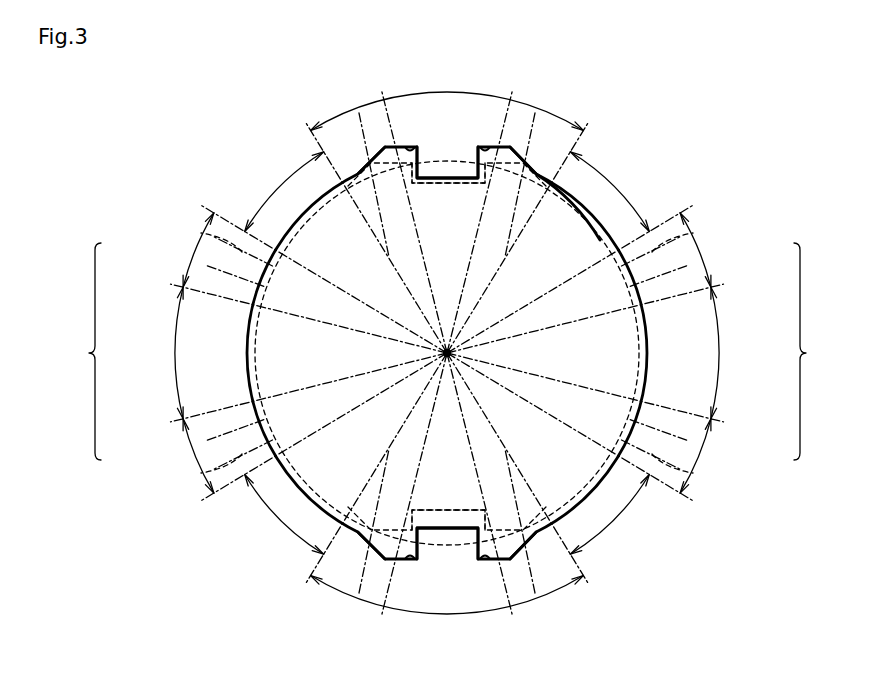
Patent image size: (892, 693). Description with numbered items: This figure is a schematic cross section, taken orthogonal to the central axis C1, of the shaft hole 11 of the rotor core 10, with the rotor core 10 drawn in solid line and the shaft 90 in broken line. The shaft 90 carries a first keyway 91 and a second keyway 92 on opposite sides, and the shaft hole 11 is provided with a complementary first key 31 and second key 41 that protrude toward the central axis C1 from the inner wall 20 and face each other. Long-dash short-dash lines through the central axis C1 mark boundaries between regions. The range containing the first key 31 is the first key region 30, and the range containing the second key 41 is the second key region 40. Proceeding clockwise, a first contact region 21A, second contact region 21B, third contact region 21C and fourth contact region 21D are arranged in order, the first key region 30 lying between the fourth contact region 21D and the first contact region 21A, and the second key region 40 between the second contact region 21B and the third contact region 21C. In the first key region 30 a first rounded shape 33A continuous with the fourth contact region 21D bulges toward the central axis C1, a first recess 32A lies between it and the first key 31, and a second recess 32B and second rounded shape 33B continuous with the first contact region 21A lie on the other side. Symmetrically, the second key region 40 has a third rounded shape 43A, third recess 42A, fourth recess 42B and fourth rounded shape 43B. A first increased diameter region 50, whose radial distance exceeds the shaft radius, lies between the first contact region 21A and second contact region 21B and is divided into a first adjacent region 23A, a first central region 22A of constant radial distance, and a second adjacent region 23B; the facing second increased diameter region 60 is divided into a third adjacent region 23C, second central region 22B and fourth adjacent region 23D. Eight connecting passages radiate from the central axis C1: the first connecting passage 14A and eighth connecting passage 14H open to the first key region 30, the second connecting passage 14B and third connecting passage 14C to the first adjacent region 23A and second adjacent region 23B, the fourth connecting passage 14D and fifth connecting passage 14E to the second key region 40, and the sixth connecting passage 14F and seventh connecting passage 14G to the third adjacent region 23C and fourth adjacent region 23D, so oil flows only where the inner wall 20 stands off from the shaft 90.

The rotor core 10 is at (712, 107).
The shaft hole 11 is at (574, 207).
The first connecting passage 14A is at (577, 112).
The second connecting passage 14B is at (696, 210).
The third connecting passage 14C is at (696, 497).
The fourth connecting passage 14D is at (577, 596).
The fifth connecting passage 14E is at (327, 596).
The sixth connecting passage 14F is at (198, 497).
The seventh connecting passage 14G is at (198, 210).
The eighth connecting passage 14H is at (327, 112).
The inner wall 20 is at (639, 353).
The first contact region 21A is at (628, 201).
The second contact region 21B is at (628, 505).
The third contact region 21C is at (279, 514).
The fourth contact region 21D is at (279, 191).
The first central region 22A is at (718, 353).
The second central region 22B is at (176, 353).
The first adjacent region 23A is at (694, 236).
The second adjacent region 23B is at (694, 470).
The third adjacent region 23C is at (200, 470).
The fourth adjacent region 23D is at (200, 236).
The first key region 30 is at (455, 91).
The first key 31 is at (448, 142).
The first recess 32A is at (410, 150).
The second recess 32B is at (487, 150).
The first rounded shape 33A is at (362, 188).
The second rounded shape 33B is at (533, 188).
The second key region 40 is at (455, 615).
The second key 41 is at (448, 562).
The third recess 42A is at (487, 557).
The fourth recess 42B is at (410, 557).
The third rounded shape 43A is at (533, 518).
The fourth rounded shape 43B is at (362, 518).
The first increased diameter region 50 is at (821, 351).
The second increased diameter region 60 is at (79, 351).
The shaft 90 is at (258, 353).
The first keyway 91 is at (448, 186).
The second keyway 92 is at (448, 522).
The central axis C1 is at (447, 346).